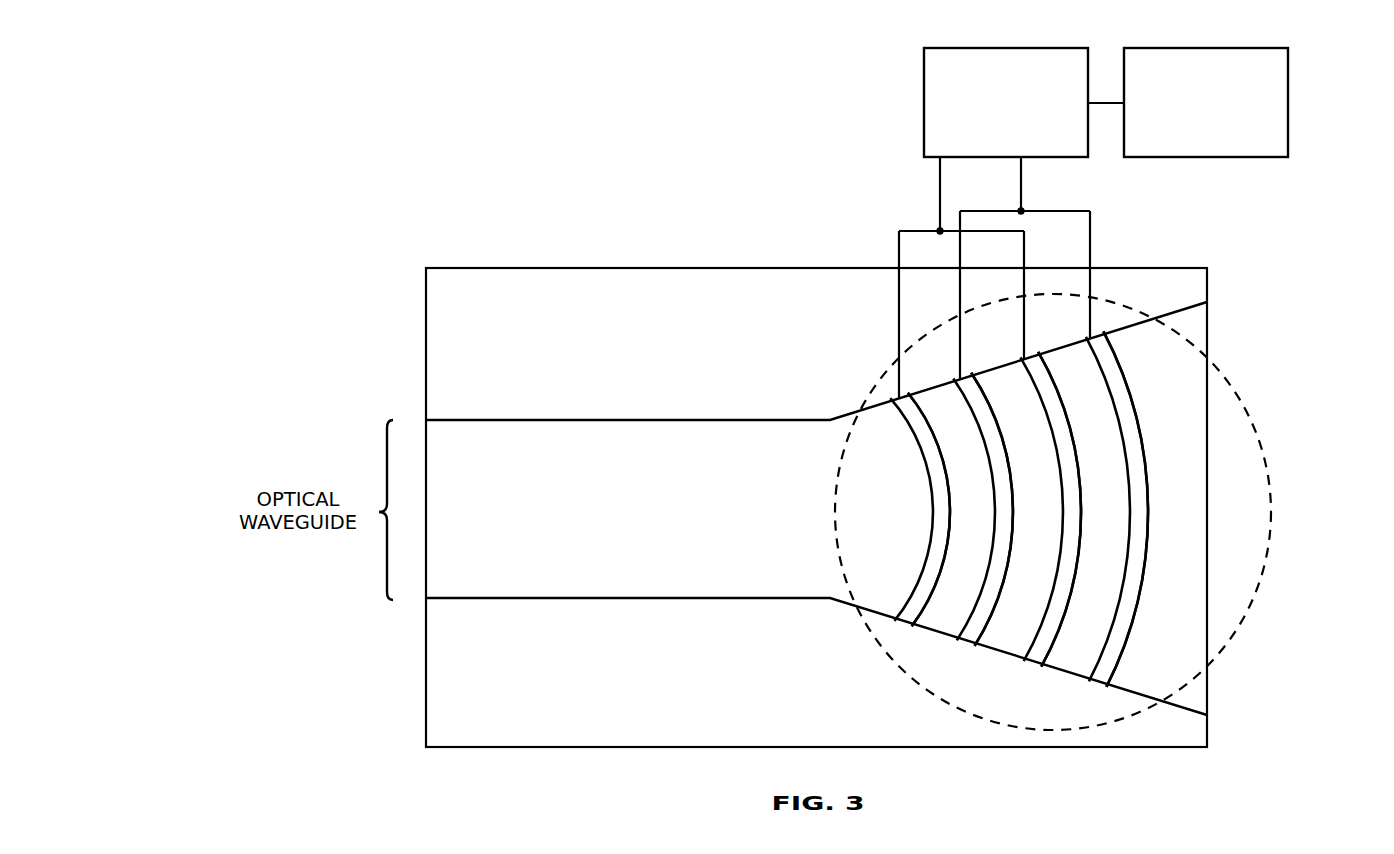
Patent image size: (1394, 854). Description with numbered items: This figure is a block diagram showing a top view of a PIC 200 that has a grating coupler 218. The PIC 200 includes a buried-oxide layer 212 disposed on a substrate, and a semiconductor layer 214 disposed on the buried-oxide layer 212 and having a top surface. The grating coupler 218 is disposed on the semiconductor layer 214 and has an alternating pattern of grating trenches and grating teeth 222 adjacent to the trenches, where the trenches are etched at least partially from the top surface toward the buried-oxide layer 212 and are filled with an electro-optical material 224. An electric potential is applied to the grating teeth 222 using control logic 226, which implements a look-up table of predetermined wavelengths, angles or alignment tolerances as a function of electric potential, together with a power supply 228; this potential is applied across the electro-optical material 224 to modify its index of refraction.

The PIC 200 is at (335, 158).
The buried-oxide layer 212 is at (816, 361).
The semiconductor layer 214 is at (520, 565).
The grating coupler 218 is at (1255, 433).
The grating teeth 222 is at (917, 415).
The electro-optical material 224 is at (1093, 617).
The control logic 226 is at (1188, 102).
The power supply 228 is at (994, 223).